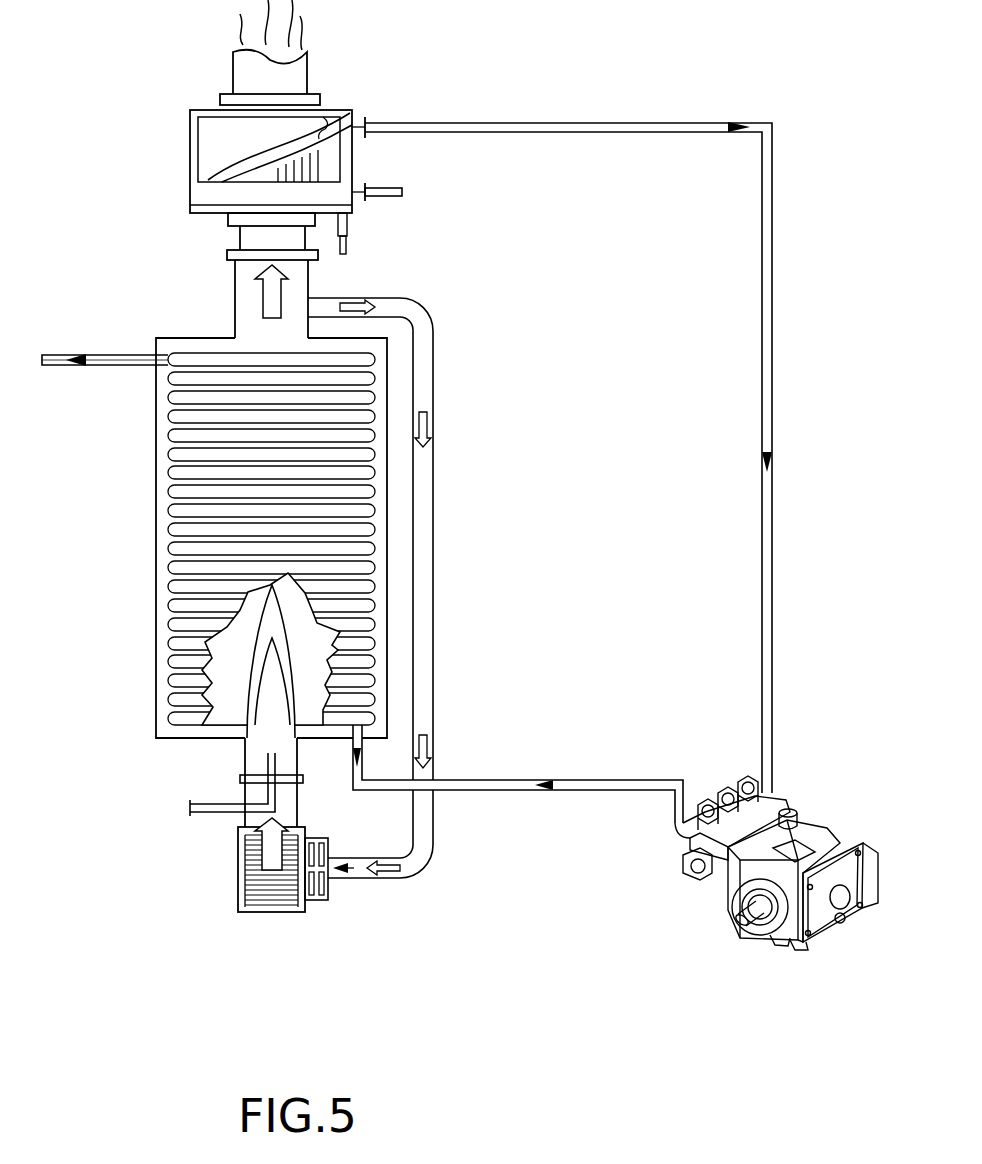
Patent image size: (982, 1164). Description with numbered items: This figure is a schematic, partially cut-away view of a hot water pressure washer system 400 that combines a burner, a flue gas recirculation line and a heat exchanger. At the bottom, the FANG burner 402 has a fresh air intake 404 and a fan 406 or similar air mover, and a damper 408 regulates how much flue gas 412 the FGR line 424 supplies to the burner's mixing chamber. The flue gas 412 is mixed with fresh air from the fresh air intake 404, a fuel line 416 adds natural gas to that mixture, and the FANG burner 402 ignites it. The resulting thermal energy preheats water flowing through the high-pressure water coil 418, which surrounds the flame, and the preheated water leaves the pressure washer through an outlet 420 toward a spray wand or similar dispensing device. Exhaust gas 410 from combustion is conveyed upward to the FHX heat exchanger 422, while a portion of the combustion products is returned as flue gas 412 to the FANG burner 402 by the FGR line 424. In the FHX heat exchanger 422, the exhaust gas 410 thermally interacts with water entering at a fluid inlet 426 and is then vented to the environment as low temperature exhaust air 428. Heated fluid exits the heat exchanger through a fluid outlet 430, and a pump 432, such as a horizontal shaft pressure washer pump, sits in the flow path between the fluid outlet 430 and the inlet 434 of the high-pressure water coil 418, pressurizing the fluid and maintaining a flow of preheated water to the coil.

The hot water pressure washer system 400 is at (568, 344).
The FANG burner 402 is at (256, 912).
The fresh air intake 404 is at (313, 900).
The fan 406 is at (238, 893).
The damper 408 is at (345, 872).
The exhaust gas 410 is at (262, 292).
The flue gas 412 is at (432, 413).
The fuel line 416 is at (200, 812).
The high-pressure water coil 418 is at (168, 584).
The outlet 420 is at (103, 353).
The FHX heat exchanger 422 is at (190, 138).
The FGR line 424 is at (433, 645).
The fluid inlet 426 is at (387, 195).
The low temperature exhaust air 428 is at (306, 36).
The fluid outlet 430 is at (417, 122).
The pump 432 is at (740, 920).
The inlet 434 is at (352, 770).